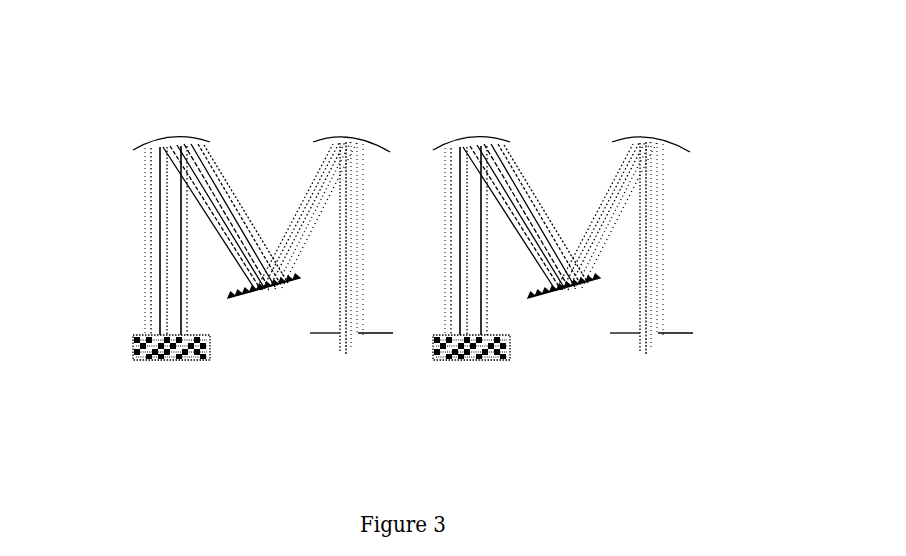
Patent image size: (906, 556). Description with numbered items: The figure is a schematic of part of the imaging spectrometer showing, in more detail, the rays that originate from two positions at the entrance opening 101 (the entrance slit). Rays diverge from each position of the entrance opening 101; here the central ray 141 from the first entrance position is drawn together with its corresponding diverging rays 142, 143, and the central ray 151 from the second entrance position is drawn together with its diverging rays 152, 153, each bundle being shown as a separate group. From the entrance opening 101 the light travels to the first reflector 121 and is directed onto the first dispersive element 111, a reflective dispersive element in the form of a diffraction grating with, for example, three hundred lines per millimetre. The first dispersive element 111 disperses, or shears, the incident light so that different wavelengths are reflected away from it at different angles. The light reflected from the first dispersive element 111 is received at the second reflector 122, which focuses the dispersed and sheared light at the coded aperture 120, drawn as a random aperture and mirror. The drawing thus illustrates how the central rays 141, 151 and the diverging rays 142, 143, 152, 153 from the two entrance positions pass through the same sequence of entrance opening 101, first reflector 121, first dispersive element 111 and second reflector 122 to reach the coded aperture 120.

The entrance opening 101 is at (380, 331).
The first dispersive element 111 is at (263, 290).
The coded aperture 120 is at (210, 355).
The first reflector 121 is at (352, 138).
The second reflector 122 is at (170, 140).
The central ray from first entrance position 141 is at (317, 182).
The diverging ray from first entrance position 142 is at (163, 198).
The diverging ray from first entrance position 143 is at (183, 283).
The central ray from second entrance position 151 is at (657, 170).
The diverging ray from second entrance position 152 is at (442, 181).
The diverging ray from second entrance position 153 is at (478, 172).